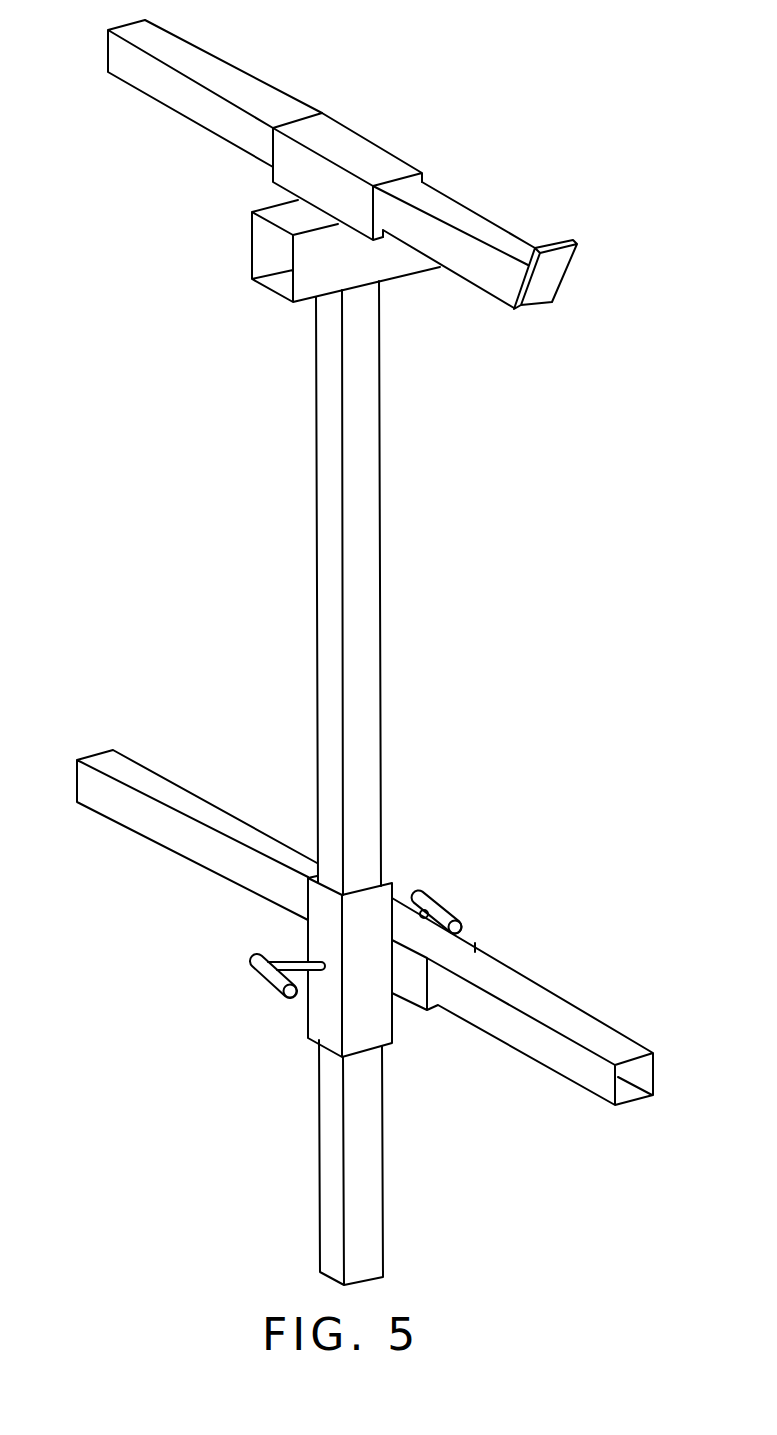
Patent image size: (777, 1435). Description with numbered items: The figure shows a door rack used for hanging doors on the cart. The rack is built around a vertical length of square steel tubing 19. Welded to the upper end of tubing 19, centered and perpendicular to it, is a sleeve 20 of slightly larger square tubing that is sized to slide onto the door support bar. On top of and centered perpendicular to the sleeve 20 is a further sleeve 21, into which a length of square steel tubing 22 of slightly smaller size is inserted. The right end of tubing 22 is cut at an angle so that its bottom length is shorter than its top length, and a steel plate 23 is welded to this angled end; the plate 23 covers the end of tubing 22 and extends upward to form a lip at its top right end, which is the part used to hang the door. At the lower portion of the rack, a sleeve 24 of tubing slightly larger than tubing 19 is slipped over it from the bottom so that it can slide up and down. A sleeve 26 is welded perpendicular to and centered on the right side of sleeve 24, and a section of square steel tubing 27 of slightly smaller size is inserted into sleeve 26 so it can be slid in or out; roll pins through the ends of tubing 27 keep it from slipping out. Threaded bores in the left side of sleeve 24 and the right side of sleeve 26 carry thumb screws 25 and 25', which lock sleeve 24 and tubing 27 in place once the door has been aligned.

The square steel tubing 19 is at (379, 552).
The sleeve 20 is at (252, 241).
The sleeve 21 is at (375, 143).
The square steel tubing 22 is at (467, 207).
The steel plate 23 is at (568, 275).
The sleeve 24 is at (393, 1035).
The thumb screw 25 is at (240, 981).
The thumb screw 25' is at (455, 889).
The sleeve 26 is at (475, 945).
The square steel tubing 27 is at (152, 772).